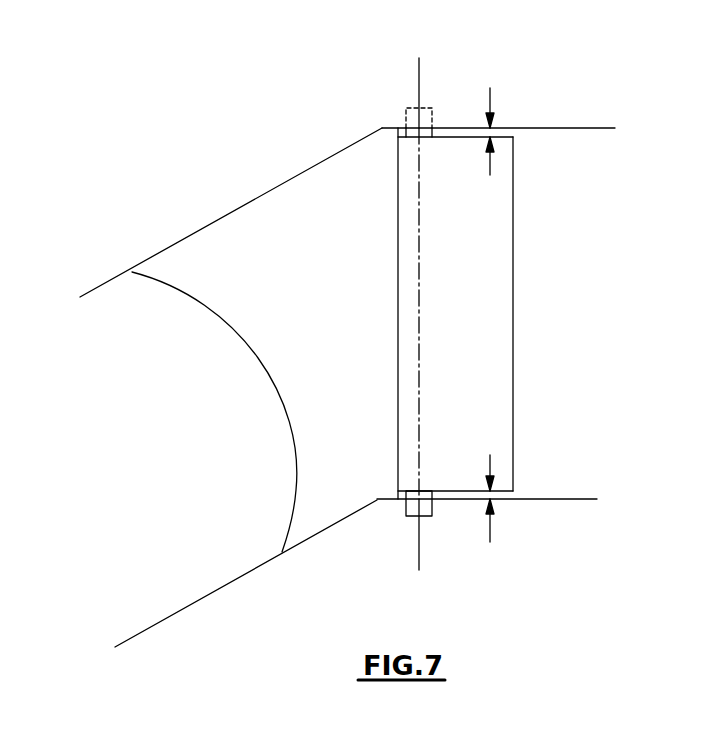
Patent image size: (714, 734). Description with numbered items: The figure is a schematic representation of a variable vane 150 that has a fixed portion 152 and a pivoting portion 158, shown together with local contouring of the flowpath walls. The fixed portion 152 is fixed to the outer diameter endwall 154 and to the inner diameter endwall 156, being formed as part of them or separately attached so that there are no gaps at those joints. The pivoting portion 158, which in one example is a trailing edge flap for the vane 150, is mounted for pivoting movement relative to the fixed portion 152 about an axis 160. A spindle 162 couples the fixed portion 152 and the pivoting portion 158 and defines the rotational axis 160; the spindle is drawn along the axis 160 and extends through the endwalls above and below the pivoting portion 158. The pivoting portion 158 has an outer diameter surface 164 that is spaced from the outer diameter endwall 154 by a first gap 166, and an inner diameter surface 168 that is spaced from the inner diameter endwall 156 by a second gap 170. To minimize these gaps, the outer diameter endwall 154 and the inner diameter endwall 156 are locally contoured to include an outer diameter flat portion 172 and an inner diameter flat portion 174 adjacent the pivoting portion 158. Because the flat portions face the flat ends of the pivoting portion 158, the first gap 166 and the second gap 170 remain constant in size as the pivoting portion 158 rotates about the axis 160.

The variable vane 150 is at (156, 355).
The fixed portion 152 is at (320, 355).
The outer diameter endwall 154 is at (107, 282).
The inner diameter endwall 156 is at (212, 593).
The pivoting portion 158 is at (478, 323).
The axis 160 is at (420, 77).
The spindle 162 is at (405, 115).
The outer diameter surface 164 is at (457, 129).
The first gap 166 is at (490, 95).
The inner diameter surface 168 is at (442, 488).
The second gap 170 is at (488, 532).
The outer diameter flat portion 172 is at (458, 127).
The inner diameter flat portion 174 is at (503, 500).